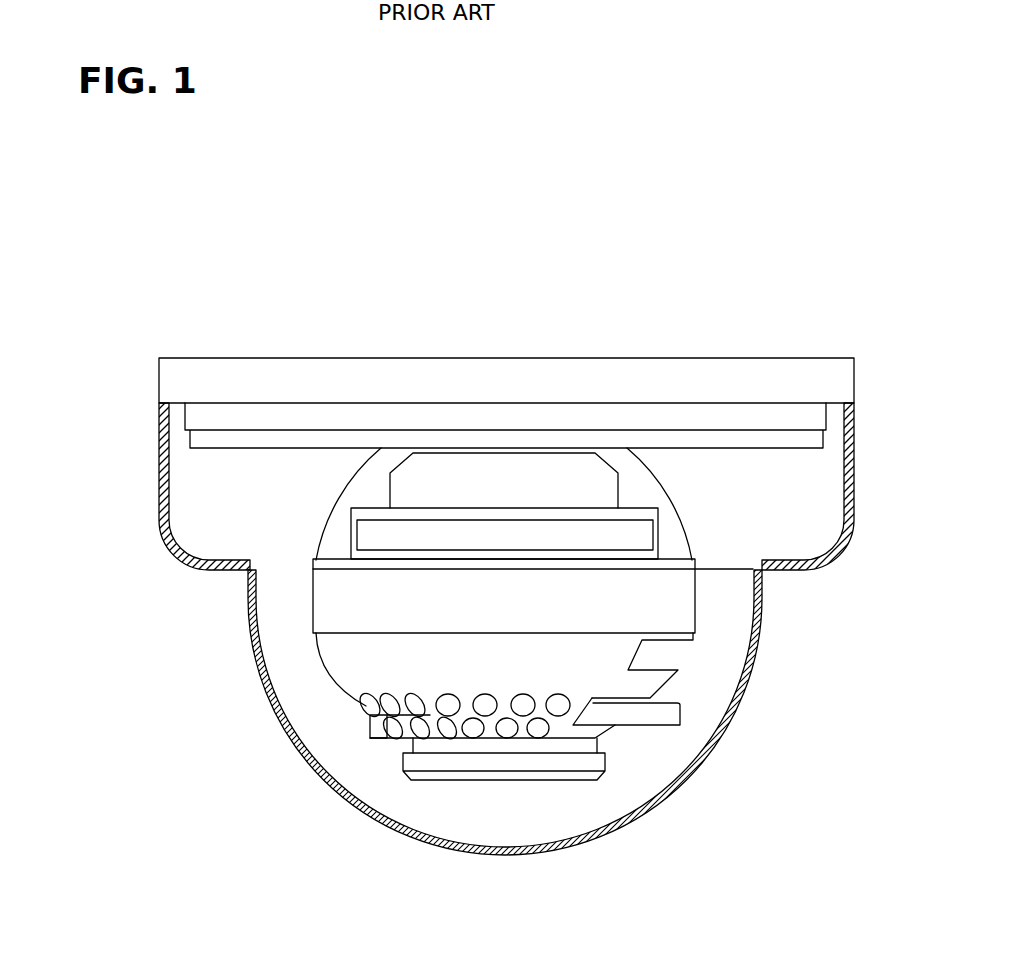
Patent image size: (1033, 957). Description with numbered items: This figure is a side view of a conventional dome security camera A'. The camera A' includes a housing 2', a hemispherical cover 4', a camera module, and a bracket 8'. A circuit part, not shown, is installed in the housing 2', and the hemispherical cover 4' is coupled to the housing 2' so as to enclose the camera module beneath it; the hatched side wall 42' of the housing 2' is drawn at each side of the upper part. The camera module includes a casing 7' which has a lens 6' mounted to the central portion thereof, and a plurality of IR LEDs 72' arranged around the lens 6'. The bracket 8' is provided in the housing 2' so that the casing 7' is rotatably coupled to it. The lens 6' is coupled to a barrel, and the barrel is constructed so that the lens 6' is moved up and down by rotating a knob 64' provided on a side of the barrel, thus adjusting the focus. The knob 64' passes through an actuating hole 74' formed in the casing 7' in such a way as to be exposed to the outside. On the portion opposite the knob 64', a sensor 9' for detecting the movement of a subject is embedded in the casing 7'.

The conventional dome security camera A' is at (742, 240).
The housing 2' is at (458, 400).
The housing side wall flange 42' is at (447, 486).
The hemispherical cover 4' is at (505, 712).
The casing 7' is at (436, 577).
The bracket 8' is at (572, 596).
The actuating hole 74' is at (712, 685).
The knob 64' is at (669, 769).
The sensor 9' is at (475, 804).
The IR LEDs 72' is at (463, 805).
The lens 6' is at (504, 836).